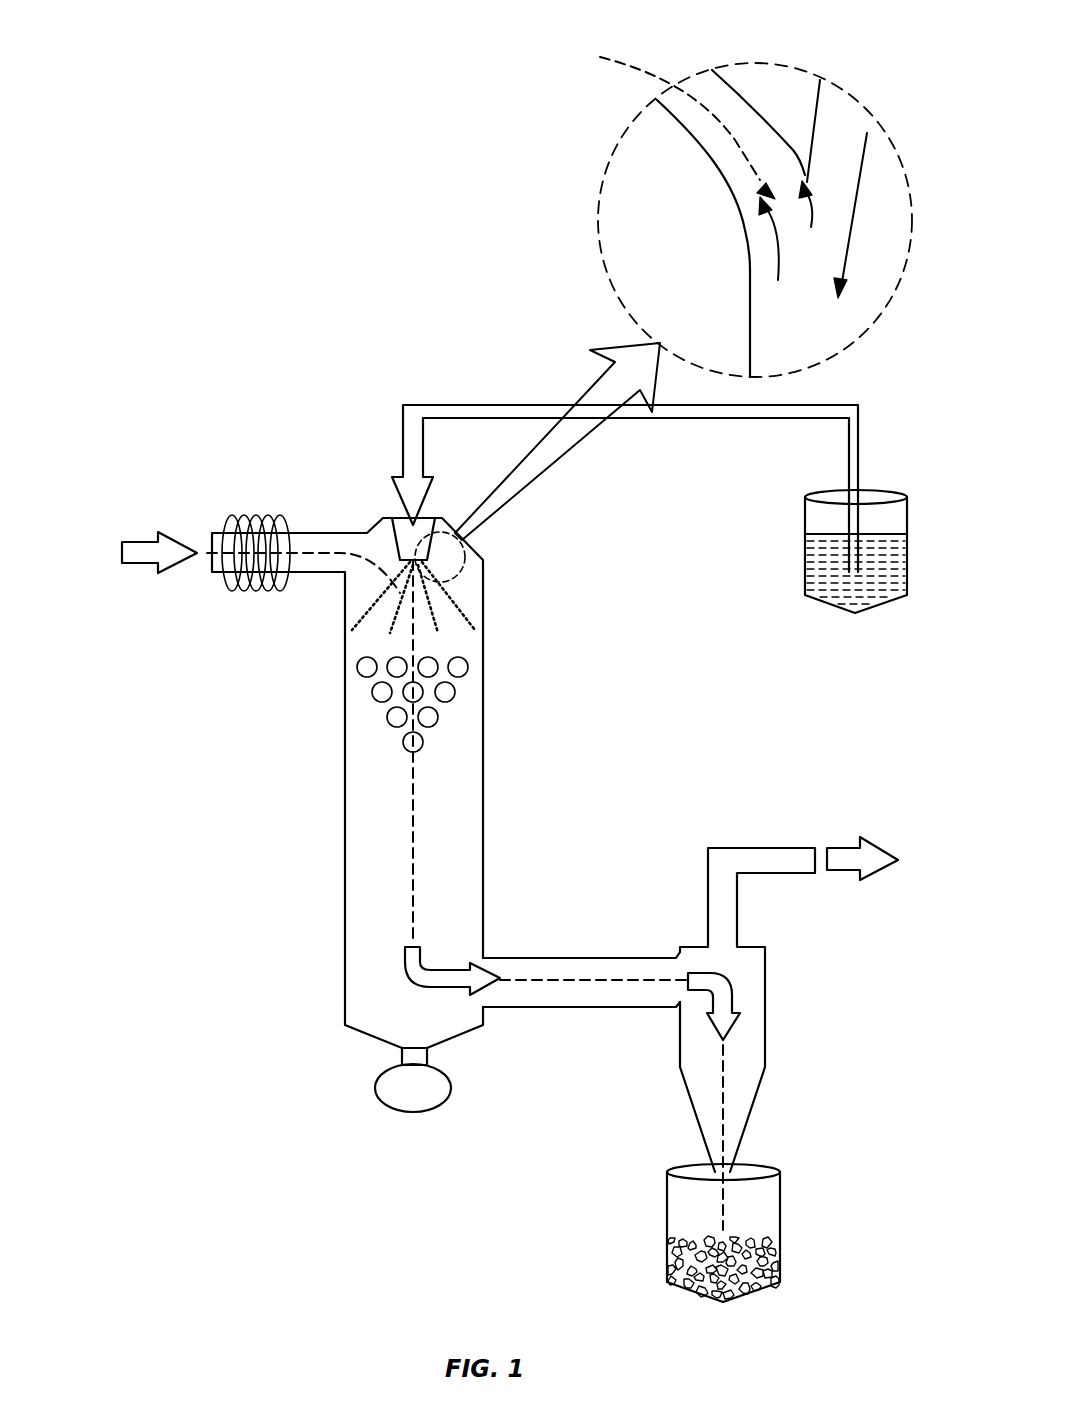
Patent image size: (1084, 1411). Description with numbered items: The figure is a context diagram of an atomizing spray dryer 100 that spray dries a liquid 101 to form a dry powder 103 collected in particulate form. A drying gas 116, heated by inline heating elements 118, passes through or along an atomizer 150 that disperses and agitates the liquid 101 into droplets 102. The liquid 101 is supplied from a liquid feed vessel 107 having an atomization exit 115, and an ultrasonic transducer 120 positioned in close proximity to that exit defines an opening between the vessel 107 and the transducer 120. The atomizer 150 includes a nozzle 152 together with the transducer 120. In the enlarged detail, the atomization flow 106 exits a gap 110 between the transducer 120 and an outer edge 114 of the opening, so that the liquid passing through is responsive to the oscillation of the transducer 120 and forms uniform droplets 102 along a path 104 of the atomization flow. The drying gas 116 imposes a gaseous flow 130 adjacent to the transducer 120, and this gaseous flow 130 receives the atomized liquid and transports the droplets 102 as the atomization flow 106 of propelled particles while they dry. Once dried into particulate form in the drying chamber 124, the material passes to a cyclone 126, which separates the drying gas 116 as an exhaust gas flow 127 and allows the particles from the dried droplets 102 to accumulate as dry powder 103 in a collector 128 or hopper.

The atomizing spray dryer 100 is at (333, 298).
The liquid 101 is at (805, 580).
The droplets 102 is at (505, 655).
The dry powder 103 is at (753, 1267).
The path 104 is at (413, 823).
The atomization flow 106 is at (505, 553).
The liquid feed vessel 107 is at (453, 405).
The gap 110 is at (687, 68).
The outer edge 114 is at (813, 220).
The atomization exit 115 is at (786, 252).
The drying gas 116 is at (128, 566).
The inline heating elements 118 is at (255, 515).
The ultrasonic transducer 120 is at (643, 291).
The drying chamber 124 is at (344, 797).
The cyclone 126 is at (765, 1030).
The exhaust gas flow 127 is at (772, 846).
The collector 128 is at (667, 1210).
The gaseous flow 130 is at (853, 193).
The atomizer 150 is at (413, 527).
The nozzle 152 is at (787, 102).